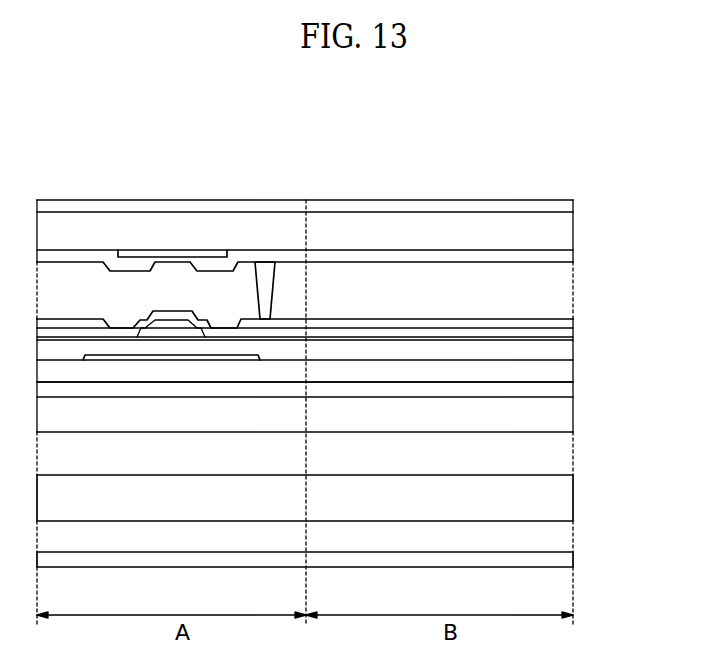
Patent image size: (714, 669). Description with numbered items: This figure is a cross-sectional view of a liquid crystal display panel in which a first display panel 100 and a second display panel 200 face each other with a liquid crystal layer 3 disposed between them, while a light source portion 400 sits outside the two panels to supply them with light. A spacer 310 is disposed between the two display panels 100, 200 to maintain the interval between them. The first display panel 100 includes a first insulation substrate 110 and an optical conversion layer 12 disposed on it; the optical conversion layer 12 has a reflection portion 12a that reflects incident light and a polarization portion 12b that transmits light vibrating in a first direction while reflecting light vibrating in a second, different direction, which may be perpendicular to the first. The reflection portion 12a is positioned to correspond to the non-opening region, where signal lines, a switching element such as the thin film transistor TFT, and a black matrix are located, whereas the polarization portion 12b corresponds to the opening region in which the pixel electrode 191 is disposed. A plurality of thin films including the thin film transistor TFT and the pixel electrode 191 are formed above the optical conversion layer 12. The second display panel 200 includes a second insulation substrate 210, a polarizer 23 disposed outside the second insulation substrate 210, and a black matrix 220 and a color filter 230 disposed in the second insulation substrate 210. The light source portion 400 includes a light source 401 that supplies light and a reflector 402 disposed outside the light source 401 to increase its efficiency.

The polarizer 23 is at (563, 204).
The second insulation substrate 210 is at (563, 233).
The color filter 230 is at (563, 258).
The black matrix 220 is at (171, 251).
The second display panel 200 is at (357, 213).
The liquid crystal layer 3 is at (458, 290).
The spacer 310 is at (268, 286).
The first display panel 100 is at (357, 309).
The pixel electrode 191 is at (439, 325).
The thin film transistor TFT is at (119, 307).
The optical conversion layer 12 is at (563, 390).
The reflection portion 12a is at (171, 388).
The polarization portion 12b is at (419, 390).
The first insulation substrate 110 is at (563, 414).
The light source portion 400 is at (357, 523).
The light source 401 is at (563, 500).
The reflector 402 is at (563, 558).